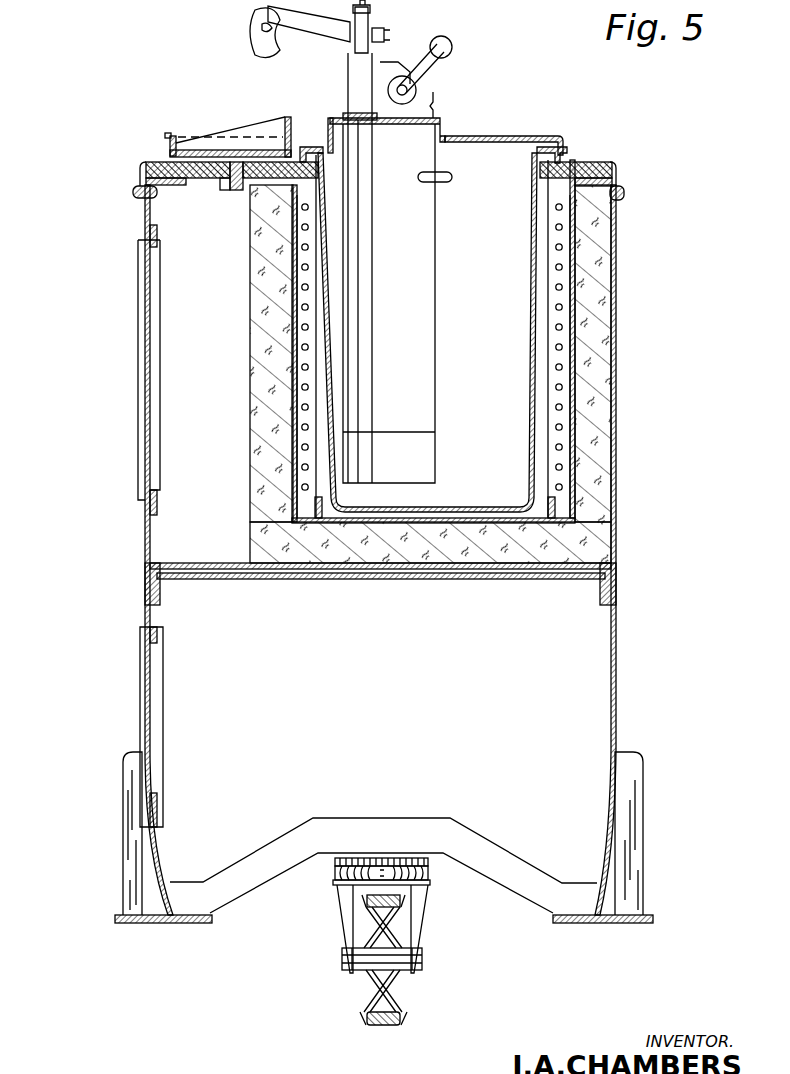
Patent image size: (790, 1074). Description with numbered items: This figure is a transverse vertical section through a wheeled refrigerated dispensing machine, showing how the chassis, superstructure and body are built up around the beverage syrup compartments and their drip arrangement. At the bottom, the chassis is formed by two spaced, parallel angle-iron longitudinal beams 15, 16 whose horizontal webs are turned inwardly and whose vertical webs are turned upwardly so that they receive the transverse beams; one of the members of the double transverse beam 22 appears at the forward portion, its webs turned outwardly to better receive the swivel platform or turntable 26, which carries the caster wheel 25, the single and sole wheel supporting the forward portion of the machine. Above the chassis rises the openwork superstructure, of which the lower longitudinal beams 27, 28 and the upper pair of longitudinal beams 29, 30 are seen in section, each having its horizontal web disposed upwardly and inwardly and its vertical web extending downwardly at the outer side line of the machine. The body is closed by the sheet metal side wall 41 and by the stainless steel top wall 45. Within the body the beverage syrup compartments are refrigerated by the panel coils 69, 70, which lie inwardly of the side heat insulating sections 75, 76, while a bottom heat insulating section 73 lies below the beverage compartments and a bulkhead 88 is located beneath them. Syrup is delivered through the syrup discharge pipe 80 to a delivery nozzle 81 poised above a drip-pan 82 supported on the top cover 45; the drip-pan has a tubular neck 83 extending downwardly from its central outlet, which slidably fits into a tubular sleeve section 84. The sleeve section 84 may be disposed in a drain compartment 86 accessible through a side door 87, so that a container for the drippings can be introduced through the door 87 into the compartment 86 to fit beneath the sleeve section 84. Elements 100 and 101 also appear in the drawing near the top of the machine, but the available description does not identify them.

The longitudinal beam 15 is at (188, 922).
The longitudinal beam 16 is at (590, 925).
The transverse beam 22 is at (308, 850).
The caster wheel 25 is at (368, 1025).
The swivel platform or turntable 26 is at (345, 905).
The lower longitudinal beam 27 is at (145, 573).
The lower longitudinal beam 28 is at (615, 563).
The upper longitudinal beam 29 is at (140, 168).
The upper longitudinal beam 30 is at (620, 173).
The side wall 41 is at (612, 297).
The top wall 45 is at (612, 163).
The panel coil 69 is at (568, 440).
The panel coil 70 is at (303, 400).
The bottom heat insulating section 73 is at (492, 542).
The heat insulating section 75 is at (563, 417).
The heat insulating section 76 is at (250, 420).
The syrup discharge pipe 80 is at (343, 117).
The delivery nozzle 81 is at (360, 95).
The drip-pan 82 is at (218, 130).
The tubular neck 83 is at (227, 157).
The tubular sleeve section 84 is at (173, 160).
The drain compartment 86 is at (203, 460).
The side door 87 is at (147, 392).
The bulkhead 88 is at (425, 578).
The cover 100 is at (488, 137).
The raised cover with lever 101 is at (440, 117).